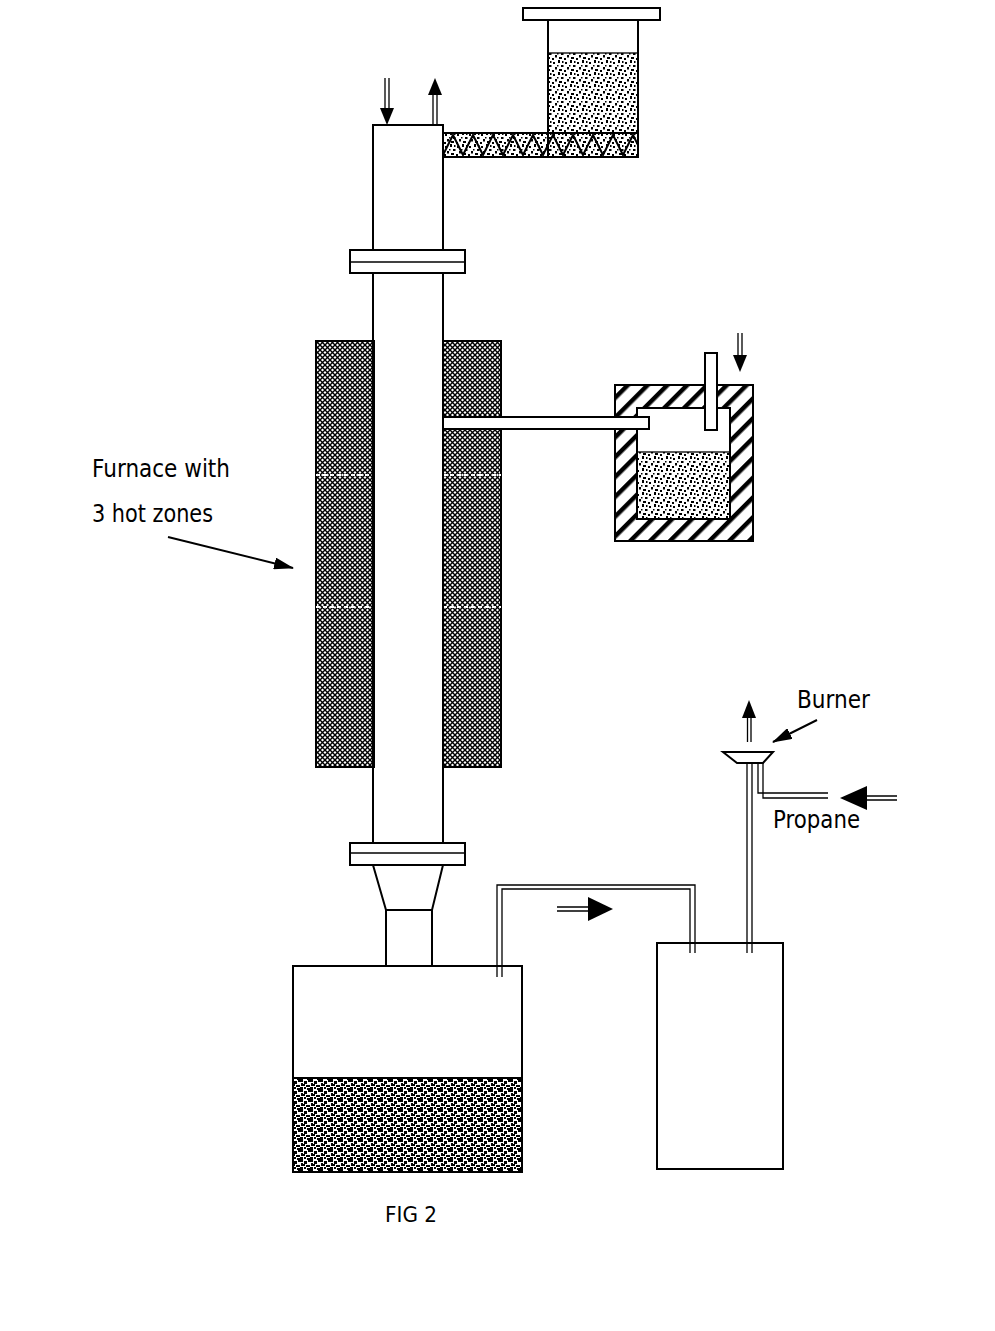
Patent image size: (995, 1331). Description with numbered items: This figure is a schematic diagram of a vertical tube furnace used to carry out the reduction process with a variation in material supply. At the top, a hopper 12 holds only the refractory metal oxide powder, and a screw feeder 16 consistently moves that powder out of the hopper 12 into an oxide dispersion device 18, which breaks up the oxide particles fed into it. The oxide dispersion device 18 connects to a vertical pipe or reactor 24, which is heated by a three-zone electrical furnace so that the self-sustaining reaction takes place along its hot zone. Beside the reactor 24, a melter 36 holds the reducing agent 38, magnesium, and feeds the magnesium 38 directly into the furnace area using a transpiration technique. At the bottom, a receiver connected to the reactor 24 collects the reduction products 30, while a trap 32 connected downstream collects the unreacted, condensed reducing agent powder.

The hopper 12 is at (650, 89).
The screw feeder 16 is at (608, 172).
The oxide dispersion device 18 is at (348, 170).
The pipe or reactor 24 is at (362, 297).
The reduction products 30 is at (322, 1128).
The trap 32 is at (795, 1125).
The melter 36 is at (620, 550).
The reducing agent (magnesium) 38 is at (727, 497).